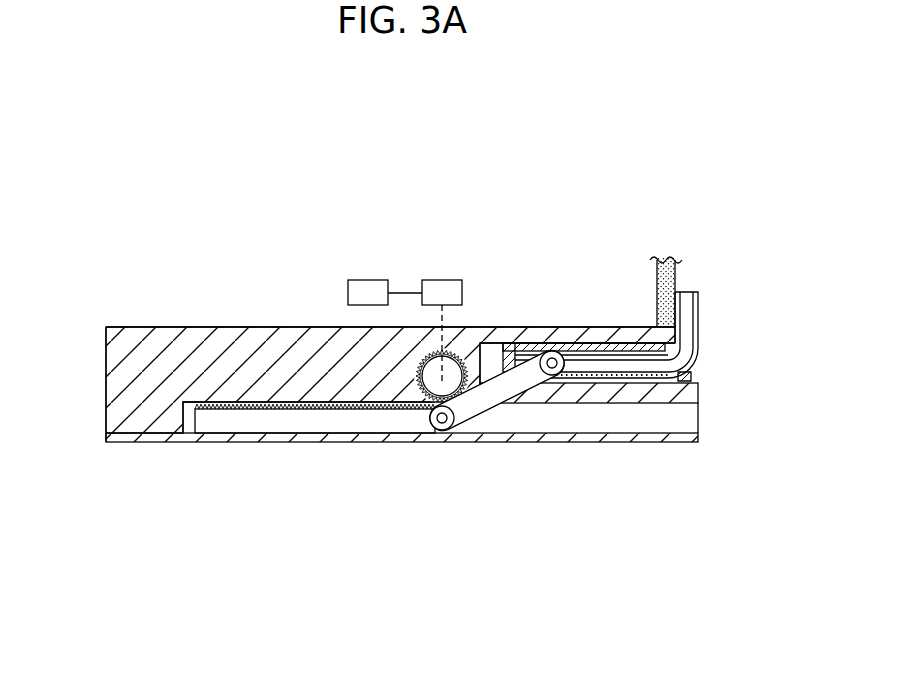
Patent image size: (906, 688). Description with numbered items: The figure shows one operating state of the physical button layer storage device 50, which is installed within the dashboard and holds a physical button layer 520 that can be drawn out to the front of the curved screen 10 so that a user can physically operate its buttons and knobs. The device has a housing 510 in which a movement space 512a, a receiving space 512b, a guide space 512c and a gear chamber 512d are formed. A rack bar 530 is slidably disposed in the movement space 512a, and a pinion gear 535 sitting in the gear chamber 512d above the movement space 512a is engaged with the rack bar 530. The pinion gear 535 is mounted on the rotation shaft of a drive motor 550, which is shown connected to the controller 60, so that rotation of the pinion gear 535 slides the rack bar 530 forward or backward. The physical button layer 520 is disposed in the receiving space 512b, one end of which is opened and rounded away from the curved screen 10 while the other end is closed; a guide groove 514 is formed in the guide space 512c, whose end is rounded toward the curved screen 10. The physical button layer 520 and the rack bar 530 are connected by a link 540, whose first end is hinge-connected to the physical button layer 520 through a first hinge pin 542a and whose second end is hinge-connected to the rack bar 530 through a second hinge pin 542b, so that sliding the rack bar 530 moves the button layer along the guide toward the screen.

The curved screen 10 is at (672, 273).
The physical button layer storage device 50 is at (708, 404).
The controller 60 is at (370, 280).
The housing 510 is at (113, 390).
The movement space 512a is at (190, 417).
The receiving space 512b is at (488, 358).
The guide space 512c is at (697, 319).
The gear chamber 512d is at (415, 380).
The guide groove 514 is at (618, 358).
The physical button layer 520 is at (693, 368).
The rack bar 530 is at (286, 425).
The pinion gear 535 is at (432, 387).
The link 540 is at (497, 402).
The first hinge pin 542a is at (553, 351).
The second hinge pin 542b is at (442, 430).
The drive motor 550 is at (440, 280).